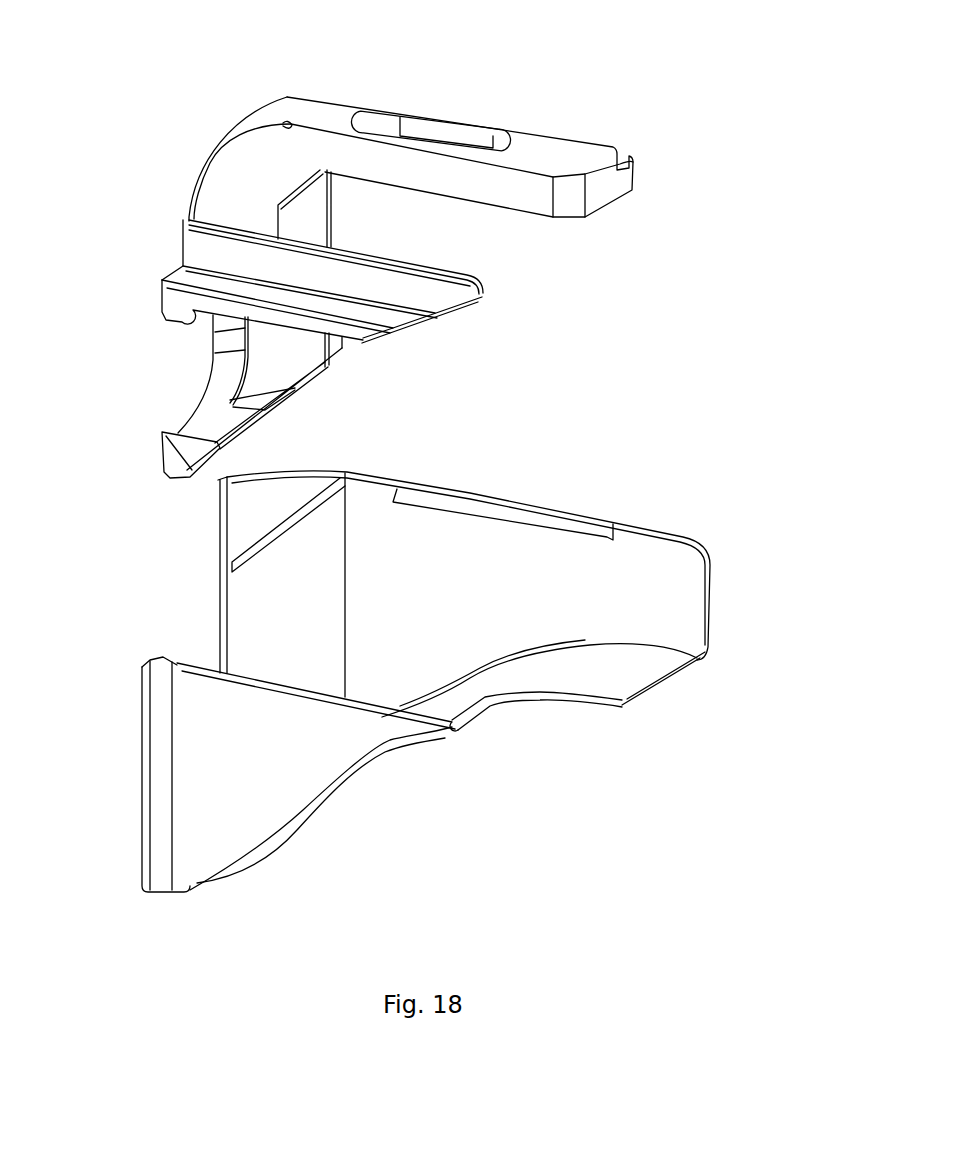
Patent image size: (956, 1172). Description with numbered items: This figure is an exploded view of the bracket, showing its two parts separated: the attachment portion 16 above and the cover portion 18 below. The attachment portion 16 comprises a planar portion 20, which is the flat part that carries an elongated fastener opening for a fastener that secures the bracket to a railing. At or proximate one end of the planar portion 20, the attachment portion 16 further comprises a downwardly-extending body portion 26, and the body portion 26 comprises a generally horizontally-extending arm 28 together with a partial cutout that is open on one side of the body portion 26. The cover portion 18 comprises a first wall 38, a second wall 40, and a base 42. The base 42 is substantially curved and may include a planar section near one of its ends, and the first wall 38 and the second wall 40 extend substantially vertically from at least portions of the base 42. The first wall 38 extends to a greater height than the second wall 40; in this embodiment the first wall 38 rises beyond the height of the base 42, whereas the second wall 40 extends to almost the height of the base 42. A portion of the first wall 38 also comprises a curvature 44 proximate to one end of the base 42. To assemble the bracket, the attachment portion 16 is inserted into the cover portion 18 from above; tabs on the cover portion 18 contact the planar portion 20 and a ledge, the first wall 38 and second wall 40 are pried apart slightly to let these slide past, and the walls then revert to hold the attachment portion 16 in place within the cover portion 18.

The attachment portion 16 is at (410, 248).
The cover portion 18 is at (458, 677).
The planar portion 20 is at (540, 153).
The body portion 26 is at (227, 212).
The arm 28 is at (428, 324).
The first wall 38 is at (628, 592).
The second wall 40 is at (243, 757).
The base 42 is at (565, 667).
The curvature 44 is at (265, 508).